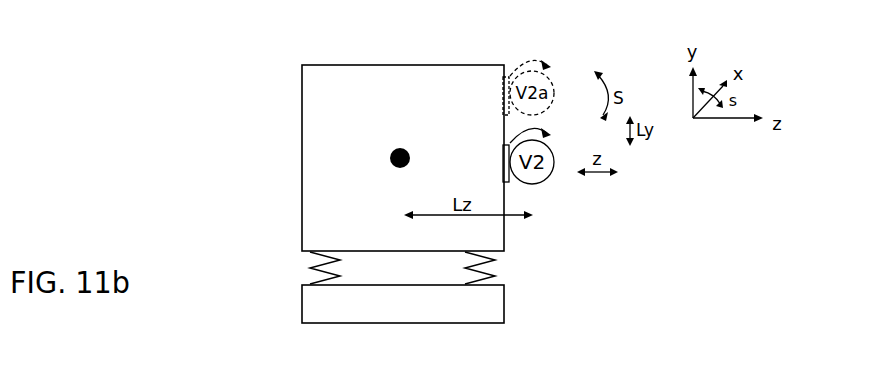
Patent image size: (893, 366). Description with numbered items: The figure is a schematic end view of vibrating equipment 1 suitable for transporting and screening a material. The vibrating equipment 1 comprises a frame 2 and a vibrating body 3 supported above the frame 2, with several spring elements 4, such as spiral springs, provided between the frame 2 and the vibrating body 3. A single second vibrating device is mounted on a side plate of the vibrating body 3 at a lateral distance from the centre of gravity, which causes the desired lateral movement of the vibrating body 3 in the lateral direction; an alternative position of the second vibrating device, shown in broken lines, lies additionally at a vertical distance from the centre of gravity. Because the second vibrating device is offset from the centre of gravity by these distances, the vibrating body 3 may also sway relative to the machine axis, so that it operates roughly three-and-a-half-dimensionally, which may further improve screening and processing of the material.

The vibrating equipment 1 is at (275, 47).
The frame 2 is at (383, 308).
The vibrating body 3 is at (318, 120).
The spring elements 4 is at (310, 268).